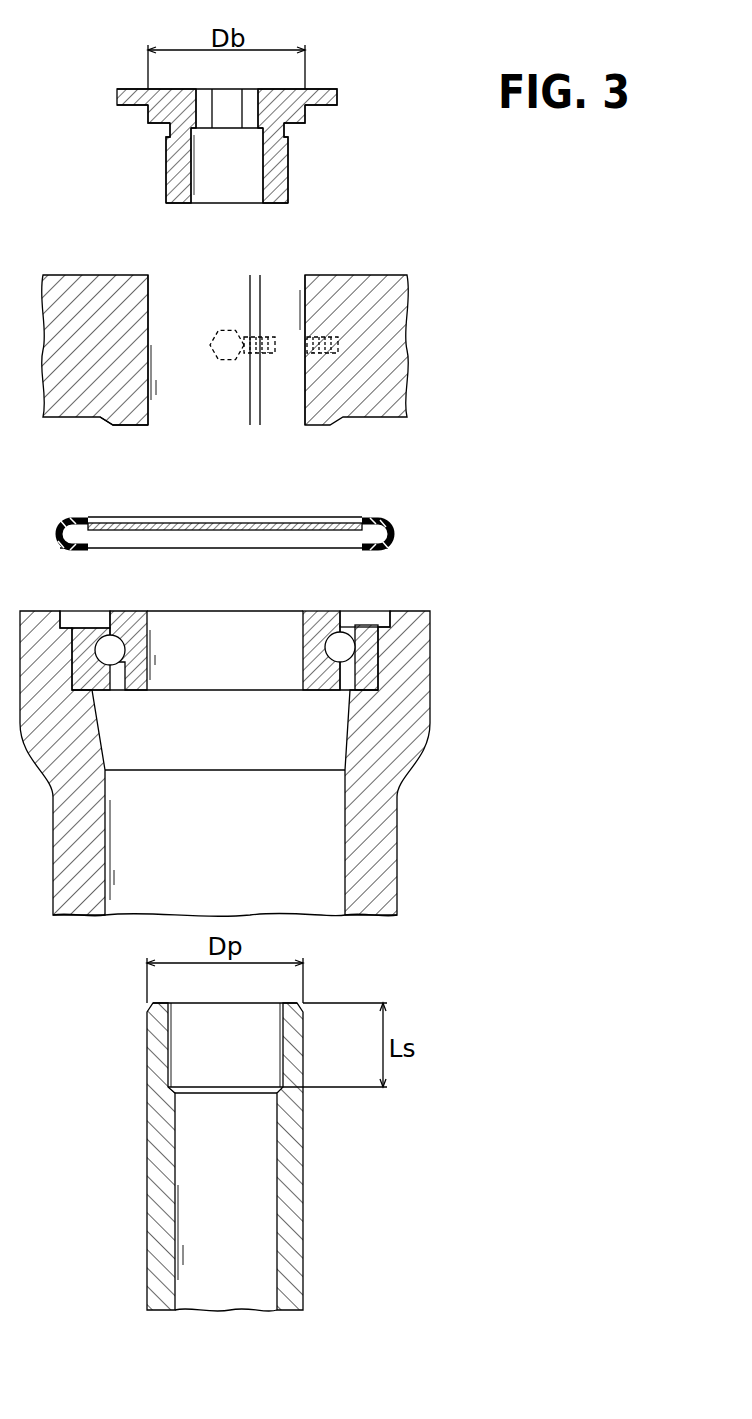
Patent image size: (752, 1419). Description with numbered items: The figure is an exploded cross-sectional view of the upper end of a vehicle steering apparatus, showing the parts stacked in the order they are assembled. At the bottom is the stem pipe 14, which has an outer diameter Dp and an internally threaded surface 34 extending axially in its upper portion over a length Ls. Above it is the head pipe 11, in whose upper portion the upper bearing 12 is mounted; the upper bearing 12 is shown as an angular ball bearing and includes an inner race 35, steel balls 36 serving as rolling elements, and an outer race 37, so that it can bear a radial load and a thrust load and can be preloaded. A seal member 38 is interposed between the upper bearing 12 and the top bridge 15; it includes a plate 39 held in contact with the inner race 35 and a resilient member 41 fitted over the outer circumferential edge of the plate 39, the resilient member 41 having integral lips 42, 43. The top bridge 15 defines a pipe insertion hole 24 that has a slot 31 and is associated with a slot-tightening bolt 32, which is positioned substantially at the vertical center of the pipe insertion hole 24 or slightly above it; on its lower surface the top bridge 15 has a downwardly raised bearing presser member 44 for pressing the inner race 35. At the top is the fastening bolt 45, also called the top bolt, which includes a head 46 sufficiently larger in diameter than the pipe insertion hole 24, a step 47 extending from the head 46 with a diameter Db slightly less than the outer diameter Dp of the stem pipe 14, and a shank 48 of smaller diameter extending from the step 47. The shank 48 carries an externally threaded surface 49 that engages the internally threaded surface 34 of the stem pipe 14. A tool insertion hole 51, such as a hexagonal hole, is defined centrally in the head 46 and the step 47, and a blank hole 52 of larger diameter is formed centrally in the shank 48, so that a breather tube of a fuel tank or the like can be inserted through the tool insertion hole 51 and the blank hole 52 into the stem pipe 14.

The head pipe 11 is at (275, 736).
The upper bearing 12 is at (357, 615).
The stem pipe 14 is at (264, 1157).
The top bridge 15 is at (269, 369).
The pipe insertion hole 24 is at (148, 317).
The slot 31 is at (258, 417).
The slot-tightening bolt 32 is at (225, 362).
The internally threaded surface 34 is at (283, 1045).
The inner race 35 is at (225, 682).
The steel balls 36 is at (337, 660).
The outer race 37 is at (343, 690).
The seal member 38 is at (286, 498).
The plate 39 is at (318, 522).
The resilient member 41 is at (378, 516).
The lip 42 is at (400, 530).
The lip 43 is at (388, 547).
The bearing presser member 44 is at (127, 425).
The fastening bolt 45 is at (230, 134).
The head 46 is at (118, 95).
The step 47 is at (148, 110).
The shank 48 is at (181, 205).
The externally threaded surface 49 is at (166, 165).
The tool insertion hole 51 is at (207, 105).
The blank hole 52 is at (262, 172).